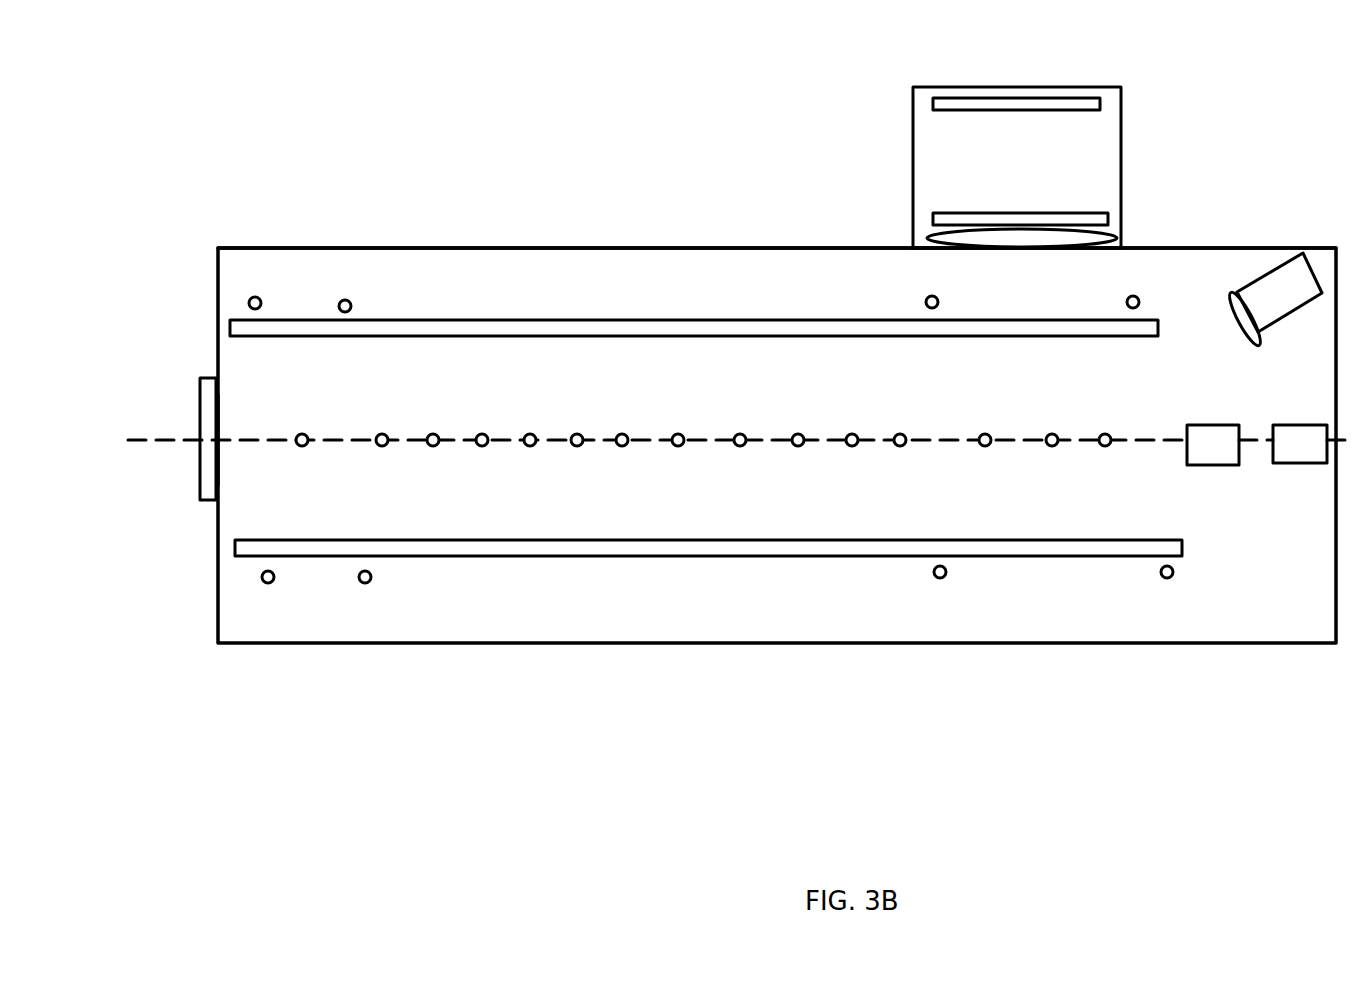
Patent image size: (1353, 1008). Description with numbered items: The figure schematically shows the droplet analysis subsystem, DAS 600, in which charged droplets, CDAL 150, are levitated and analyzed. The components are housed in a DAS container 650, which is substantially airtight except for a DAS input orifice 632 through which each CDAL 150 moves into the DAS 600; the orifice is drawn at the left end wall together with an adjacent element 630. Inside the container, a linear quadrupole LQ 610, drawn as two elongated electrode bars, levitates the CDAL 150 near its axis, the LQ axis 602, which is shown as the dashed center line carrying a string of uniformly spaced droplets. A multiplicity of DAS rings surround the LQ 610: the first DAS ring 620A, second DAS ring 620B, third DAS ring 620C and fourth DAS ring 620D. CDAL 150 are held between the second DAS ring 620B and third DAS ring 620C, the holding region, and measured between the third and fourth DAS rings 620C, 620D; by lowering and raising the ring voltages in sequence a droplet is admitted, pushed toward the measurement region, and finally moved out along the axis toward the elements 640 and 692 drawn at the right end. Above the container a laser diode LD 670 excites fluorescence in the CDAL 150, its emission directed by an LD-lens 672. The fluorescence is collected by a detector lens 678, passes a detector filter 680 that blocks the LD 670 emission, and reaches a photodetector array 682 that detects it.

The droplet analysis subsystem 600 is at (685, 49).
The LQ axis 602 is at (150, 442).
The linear quadrupole 610 is at (533, 328).
The first DAS ring 620A is at (252, 298).
The second DAS ring 620B is at (342, 300).
The third DAS ring 620C is at (938, 578).
The fourth DAS ring 620D is at (1163, 578).
The end plate 630 is at (200, 422).
The DAS input orifice 632 is at (222, 448).
The charged droplet (CDAL) 150 is at (738, 410).
The detector 640 is at (1222, 448).
The detector 692 is at (1300, 450).
The DAS container 650 is at (431, 248).
The laser diode 670 is at (1282, 303).
The LD-lens 672 is at (1236, 292).
The detector filter 680 is at (933, 216).
The photodetector array 682 is at (1082, 111).
The detector lens 678 is at (930, 240).